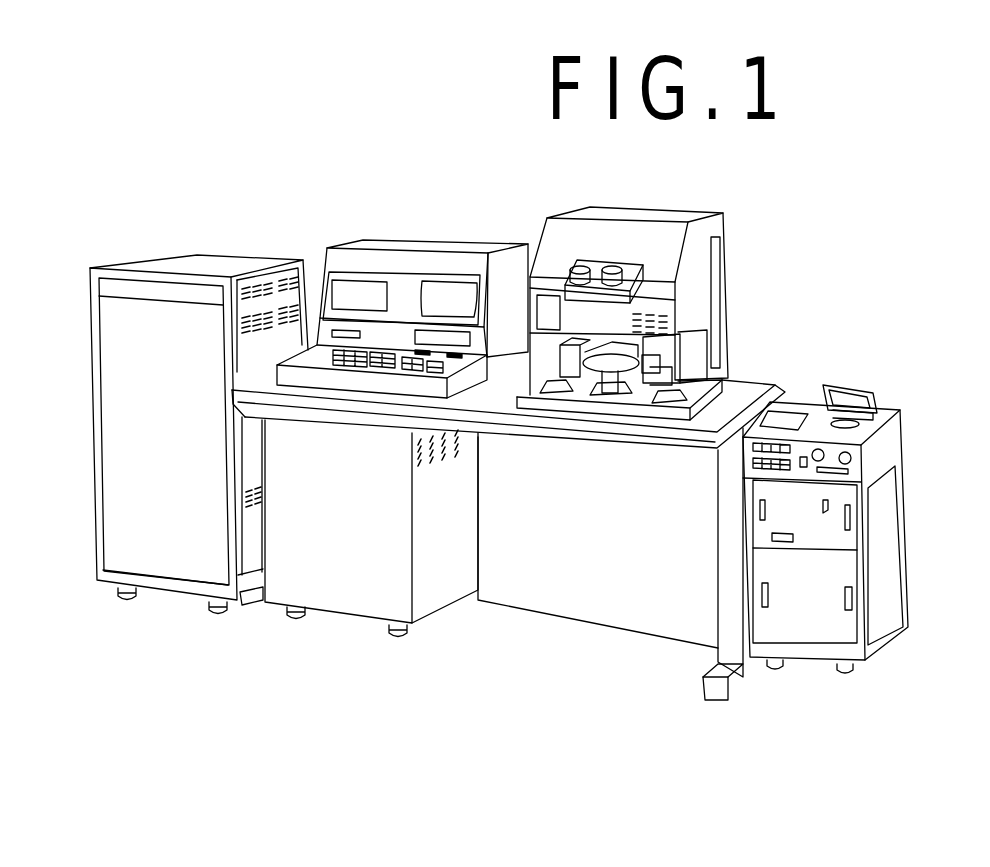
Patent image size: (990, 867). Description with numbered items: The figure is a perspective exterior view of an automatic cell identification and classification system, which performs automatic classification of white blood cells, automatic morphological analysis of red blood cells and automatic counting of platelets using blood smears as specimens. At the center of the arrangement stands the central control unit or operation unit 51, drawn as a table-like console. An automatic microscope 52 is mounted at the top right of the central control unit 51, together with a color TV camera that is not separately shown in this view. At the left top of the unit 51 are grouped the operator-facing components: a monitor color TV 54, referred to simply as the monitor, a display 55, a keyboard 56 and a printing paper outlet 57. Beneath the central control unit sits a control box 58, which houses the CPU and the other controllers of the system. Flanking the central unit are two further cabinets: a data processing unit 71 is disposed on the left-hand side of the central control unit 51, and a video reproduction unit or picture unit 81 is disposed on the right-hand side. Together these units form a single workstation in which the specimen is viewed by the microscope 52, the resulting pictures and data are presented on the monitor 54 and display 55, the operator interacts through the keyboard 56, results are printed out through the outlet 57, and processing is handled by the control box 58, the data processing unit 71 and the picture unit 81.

The central control unit 51 is at (588, 574).
The automatic microscope 52 is at (698, 272).
The monitor color TV 54 is at (447, 290).
The display 55 is at (358, 290).
The keyboard 56 is at (408, 367).
The printing paper outlet 57 is at (345, 331).
The control box 58 is at (377, 607).
The data processing unit 71 is at (160, 318).
The video reproduction unit 81 is at (870, 555).